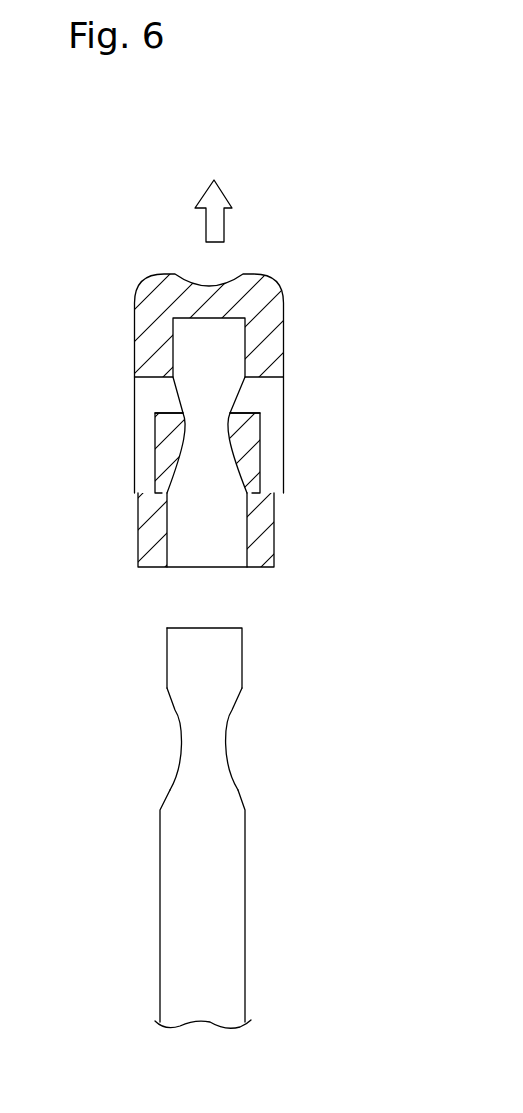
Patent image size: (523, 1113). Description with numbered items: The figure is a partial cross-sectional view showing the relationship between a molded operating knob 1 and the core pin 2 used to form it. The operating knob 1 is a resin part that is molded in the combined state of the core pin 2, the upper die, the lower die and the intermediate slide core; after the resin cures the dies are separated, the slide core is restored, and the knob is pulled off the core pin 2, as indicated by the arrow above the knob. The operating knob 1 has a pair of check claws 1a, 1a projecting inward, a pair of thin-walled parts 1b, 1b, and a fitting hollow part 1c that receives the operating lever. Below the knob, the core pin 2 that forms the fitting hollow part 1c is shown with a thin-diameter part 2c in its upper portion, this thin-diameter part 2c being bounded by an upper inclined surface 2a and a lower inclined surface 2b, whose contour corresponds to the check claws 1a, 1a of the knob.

The operating knob 1 is at (291, 286).
The check claw 1a is at (155, 413).
The thin-walled part 1b is at (156, 492).
The fitting hollow part 1c is at (216, 507).
The core pin 2 is at (157, 693).
The upper inclined surface 2a is at (176, 712).
The lower inclined surface 2b is at (167, 782).
The thin-diameter part 2c is at (206, 738).